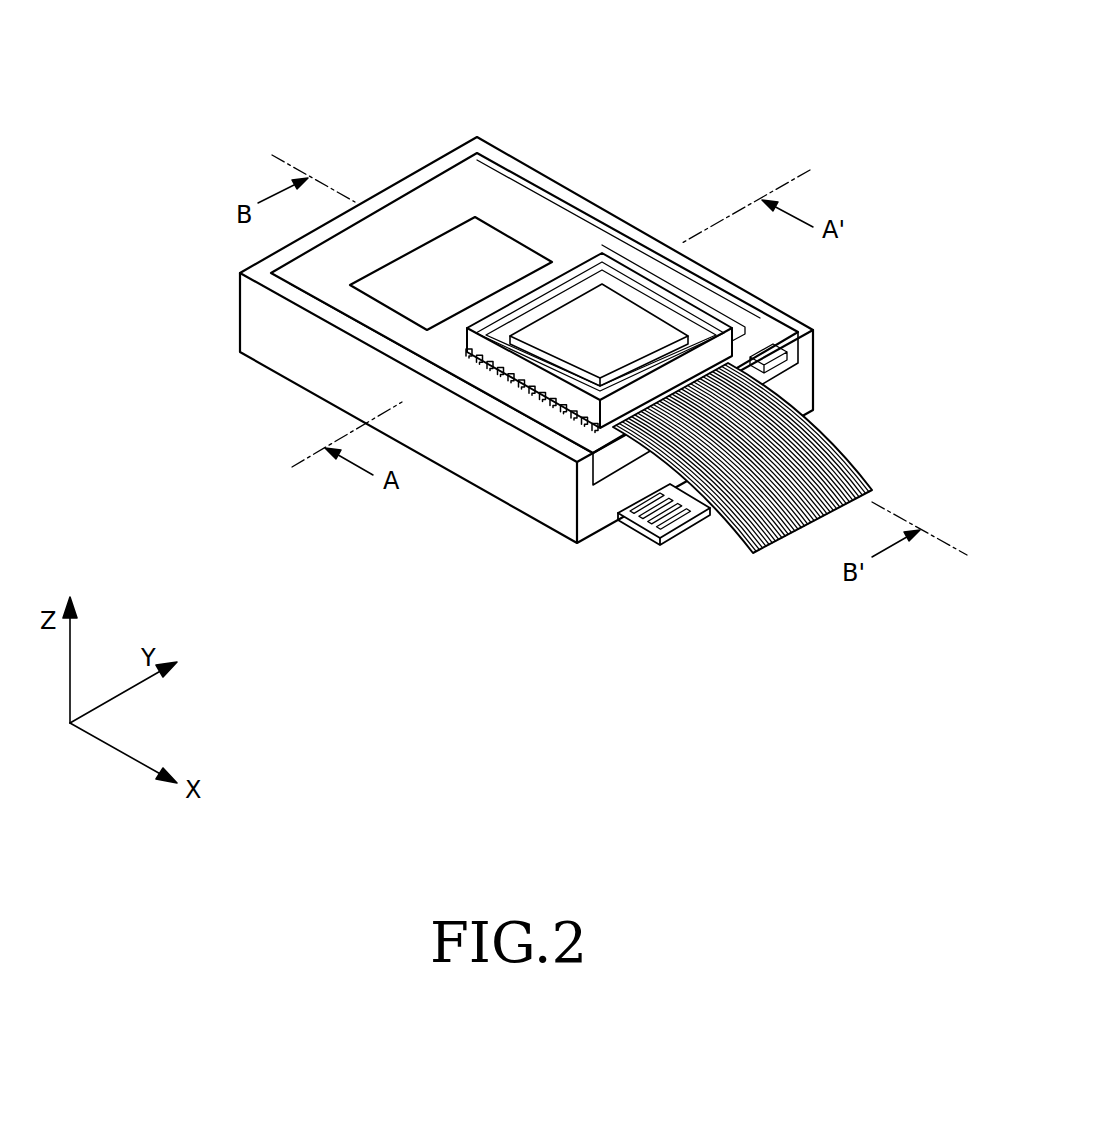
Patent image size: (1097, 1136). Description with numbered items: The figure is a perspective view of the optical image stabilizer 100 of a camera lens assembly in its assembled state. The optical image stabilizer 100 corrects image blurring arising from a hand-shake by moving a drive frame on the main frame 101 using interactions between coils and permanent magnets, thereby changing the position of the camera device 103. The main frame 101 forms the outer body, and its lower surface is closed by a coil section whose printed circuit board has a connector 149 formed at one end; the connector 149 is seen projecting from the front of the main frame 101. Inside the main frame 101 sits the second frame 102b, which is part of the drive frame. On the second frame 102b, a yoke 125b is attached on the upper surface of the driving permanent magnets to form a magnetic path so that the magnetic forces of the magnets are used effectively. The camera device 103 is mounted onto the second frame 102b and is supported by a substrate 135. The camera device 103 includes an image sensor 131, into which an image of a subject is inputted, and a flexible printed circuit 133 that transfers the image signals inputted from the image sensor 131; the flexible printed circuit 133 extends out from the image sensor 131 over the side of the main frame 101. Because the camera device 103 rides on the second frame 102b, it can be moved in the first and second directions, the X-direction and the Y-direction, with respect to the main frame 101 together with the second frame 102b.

The optical image stabilizer 100 is at (779, 33).
The main frame 101 is at (468, 470).
The second frame 102b is at (325, 290).
The yoke 125b is at (487, 240).
The image sensor 131 is at (603, 310).
The camera device 103 is at (708, 310).
The flexible printed circuit 133 is at (803, 443).
The substrate 135 is at (577, 460).
The connector 149 is at (650, 527).